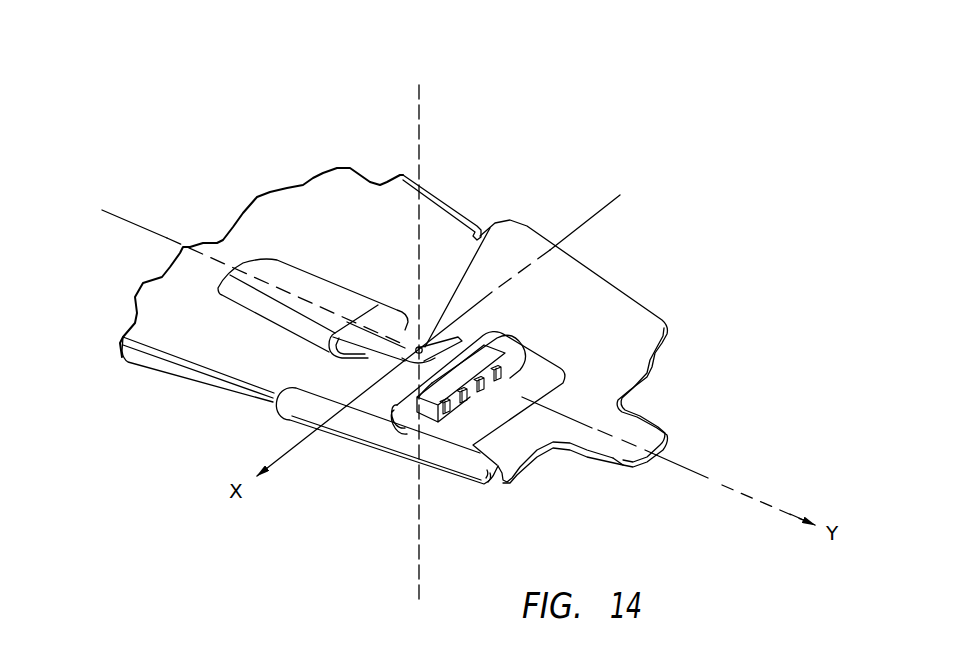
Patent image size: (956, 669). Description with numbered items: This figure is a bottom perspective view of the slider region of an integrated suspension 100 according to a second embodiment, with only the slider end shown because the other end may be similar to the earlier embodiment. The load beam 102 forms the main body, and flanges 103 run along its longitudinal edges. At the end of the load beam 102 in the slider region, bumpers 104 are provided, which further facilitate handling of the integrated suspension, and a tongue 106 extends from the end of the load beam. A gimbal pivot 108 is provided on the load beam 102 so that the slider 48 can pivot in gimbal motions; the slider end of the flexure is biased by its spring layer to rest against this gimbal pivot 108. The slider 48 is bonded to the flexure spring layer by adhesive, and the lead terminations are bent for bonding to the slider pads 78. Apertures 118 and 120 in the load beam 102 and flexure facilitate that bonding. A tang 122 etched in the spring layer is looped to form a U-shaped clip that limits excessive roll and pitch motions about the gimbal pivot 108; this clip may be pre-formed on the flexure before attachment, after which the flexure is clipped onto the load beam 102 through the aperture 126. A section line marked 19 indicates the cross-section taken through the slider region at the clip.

The integrated suspension 100 is at (600, 75).
The load beam 102 is at (323, 218).
The flanges 103 is at (443, 197).
The bumpers 104 is at (610, 283).
The tongue 106 is at (613, 453).
The gimbal pivot 108 is at (424, 345).
The aperture 118 is at (548, 377).
The aperture 120 is at (518, 350).
The tang 122 is at (368, 320).
The aperture 126 is at (317, 300).
The slider 48 is at (428, 415).
The slider pads 78 is at (478, 478).
The section line 19- 19 is at (90, 247).